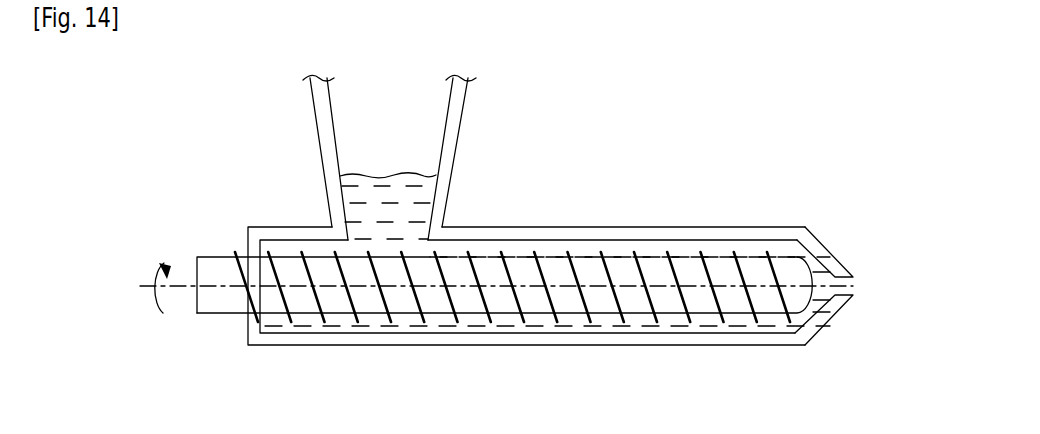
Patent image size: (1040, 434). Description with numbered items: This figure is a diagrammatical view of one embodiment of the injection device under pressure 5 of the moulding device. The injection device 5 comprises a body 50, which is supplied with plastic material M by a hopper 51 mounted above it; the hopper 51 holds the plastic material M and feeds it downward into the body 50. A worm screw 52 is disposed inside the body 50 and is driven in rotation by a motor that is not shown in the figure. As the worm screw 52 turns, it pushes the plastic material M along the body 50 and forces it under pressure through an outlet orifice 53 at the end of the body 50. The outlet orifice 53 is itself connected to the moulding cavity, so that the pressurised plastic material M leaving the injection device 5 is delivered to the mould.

The injection device under pressure 5 is at (546, 249).
The body 50 is at (692, 337).
The hopper 51 is at (421, 157).
The worm screw 52 is at (342, 300).
The outlet orifice 53 is at (866, 293).
The plastic material M is at (388, 185).